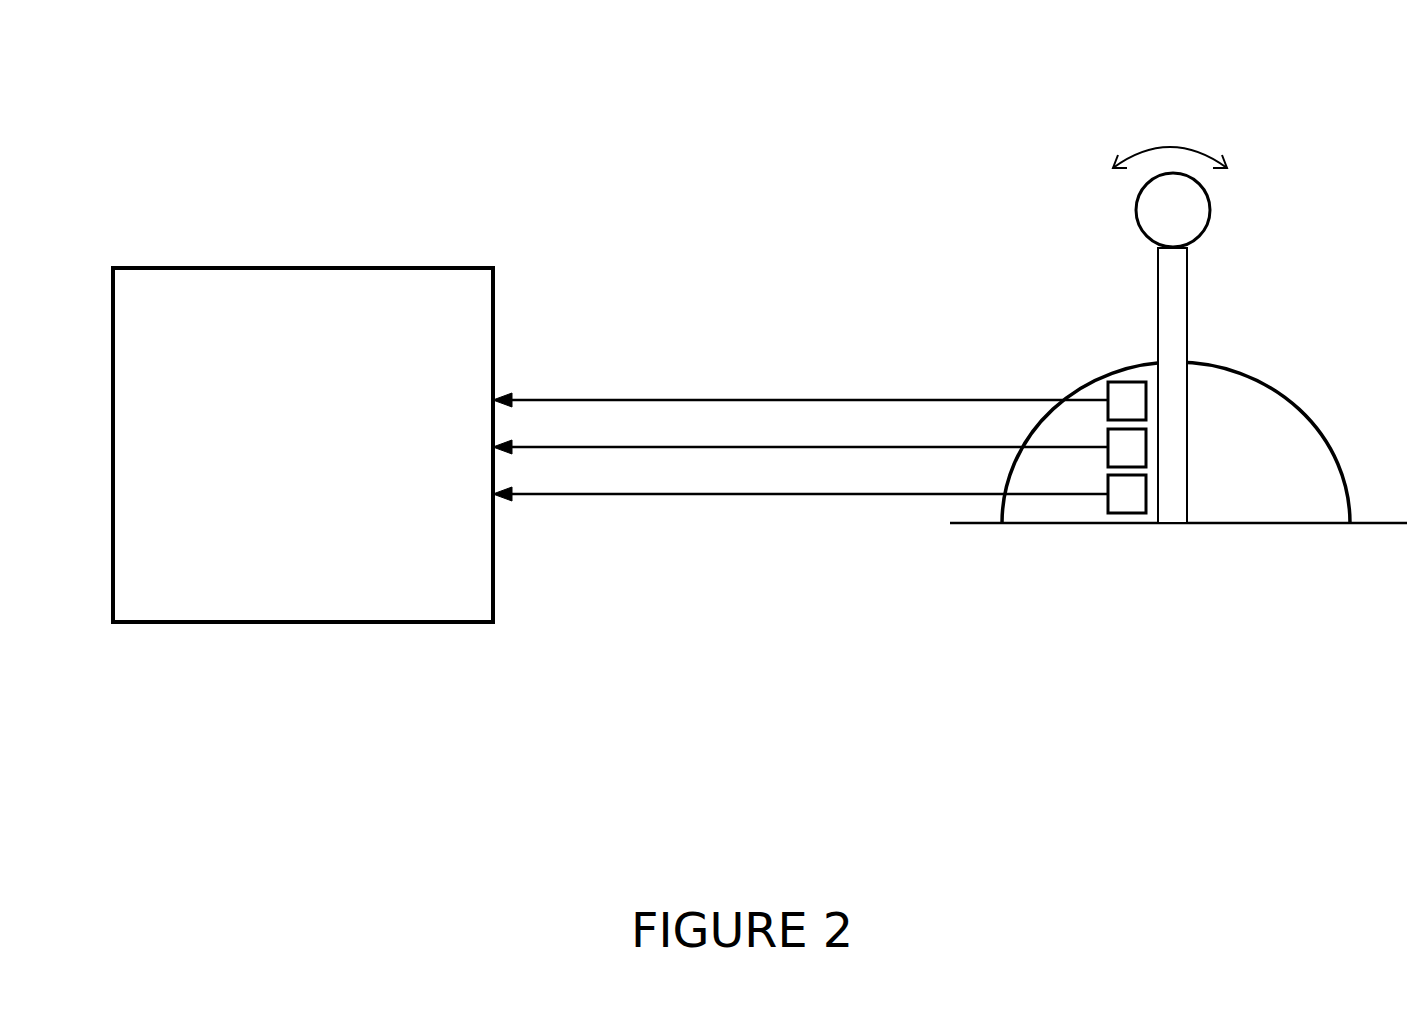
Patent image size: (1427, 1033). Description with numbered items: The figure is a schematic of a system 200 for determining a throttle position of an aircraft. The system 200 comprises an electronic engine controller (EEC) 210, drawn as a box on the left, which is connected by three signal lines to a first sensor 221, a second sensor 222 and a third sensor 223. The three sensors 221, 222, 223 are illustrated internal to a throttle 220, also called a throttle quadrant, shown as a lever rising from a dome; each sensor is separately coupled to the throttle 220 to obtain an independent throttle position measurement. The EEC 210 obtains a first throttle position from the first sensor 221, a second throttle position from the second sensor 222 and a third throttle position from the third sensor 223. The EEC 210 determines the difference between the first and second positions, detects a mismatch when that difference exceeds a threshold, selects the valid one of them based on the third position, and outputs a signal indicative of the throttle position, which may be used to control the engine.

The system 200 is at (188, 98).
The electronic engine controller 210 is at (272, 483).
The throttle 220 is at (1247, 377).
The first sensor 221 is at (1124, 393).
The second sensor 222 is at (1125, 493).
The third sensor 223 is at (1135, 447).